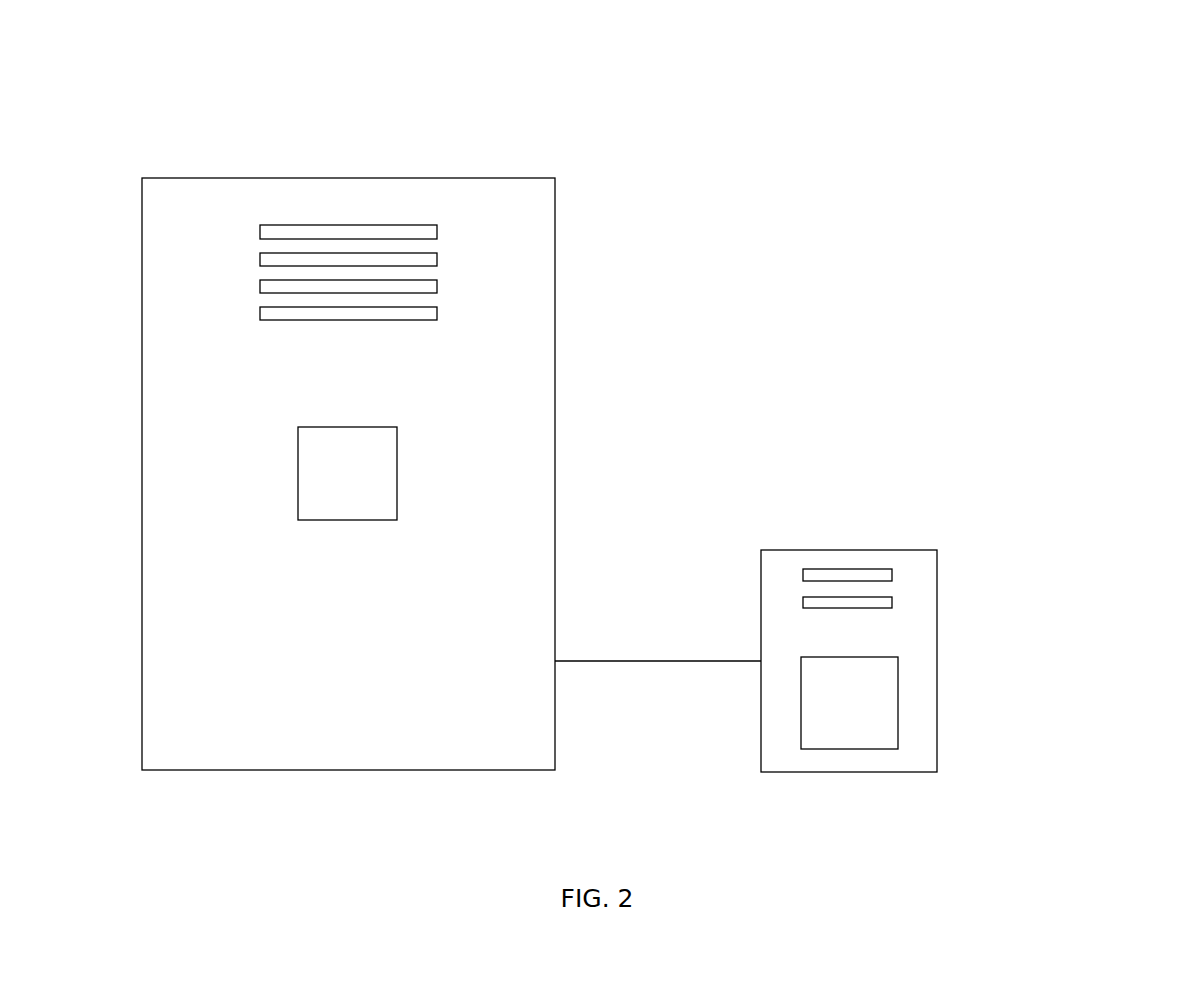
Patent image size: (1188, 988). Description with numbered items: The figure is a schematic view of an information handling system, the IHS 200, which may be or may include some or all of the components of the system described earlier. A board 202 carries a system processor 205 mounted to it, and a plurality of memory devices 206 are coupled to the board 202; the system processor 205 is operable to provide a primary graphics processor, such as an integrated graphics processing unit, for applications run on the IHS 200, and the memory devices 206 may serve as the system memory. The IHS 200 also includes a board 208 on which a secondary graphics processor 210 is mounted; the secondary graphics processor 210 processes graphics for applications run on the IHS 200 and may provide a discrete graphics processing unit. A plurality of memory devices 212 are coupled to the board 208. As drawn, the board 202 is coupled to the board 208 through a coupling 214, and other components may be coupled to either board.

The IHS 200 is at (1094, 95).
The board 202 is at (141, 178).
The system processor 205 is at (366, 486).
The memory devices 206 is at (260, 232).
The board 208 is at (761, 550).
The secondary graphics processor 210 is at (831, 716).
The memory devices 212 is at (892, 575).
The coupling 214 is at (660, 661).